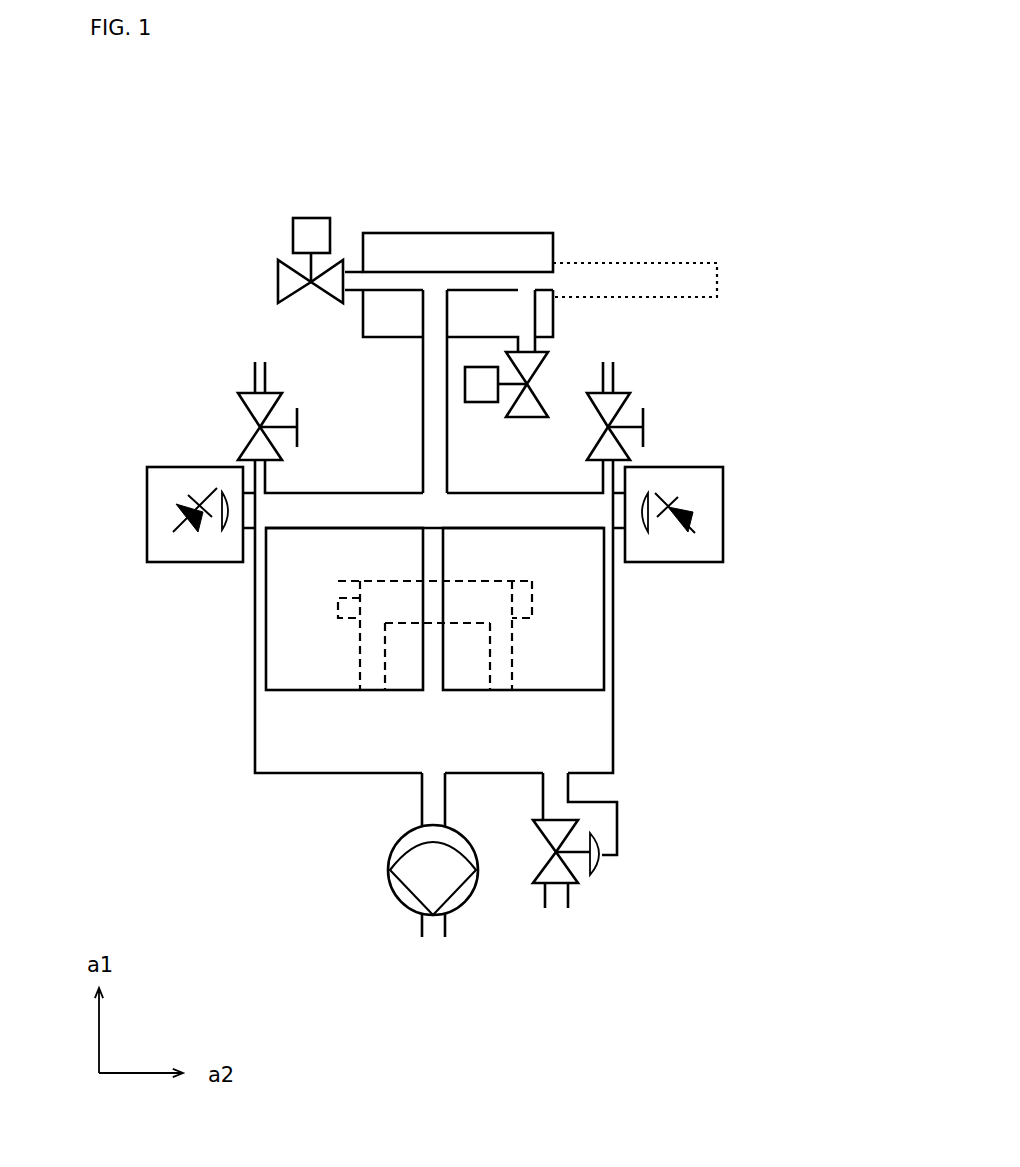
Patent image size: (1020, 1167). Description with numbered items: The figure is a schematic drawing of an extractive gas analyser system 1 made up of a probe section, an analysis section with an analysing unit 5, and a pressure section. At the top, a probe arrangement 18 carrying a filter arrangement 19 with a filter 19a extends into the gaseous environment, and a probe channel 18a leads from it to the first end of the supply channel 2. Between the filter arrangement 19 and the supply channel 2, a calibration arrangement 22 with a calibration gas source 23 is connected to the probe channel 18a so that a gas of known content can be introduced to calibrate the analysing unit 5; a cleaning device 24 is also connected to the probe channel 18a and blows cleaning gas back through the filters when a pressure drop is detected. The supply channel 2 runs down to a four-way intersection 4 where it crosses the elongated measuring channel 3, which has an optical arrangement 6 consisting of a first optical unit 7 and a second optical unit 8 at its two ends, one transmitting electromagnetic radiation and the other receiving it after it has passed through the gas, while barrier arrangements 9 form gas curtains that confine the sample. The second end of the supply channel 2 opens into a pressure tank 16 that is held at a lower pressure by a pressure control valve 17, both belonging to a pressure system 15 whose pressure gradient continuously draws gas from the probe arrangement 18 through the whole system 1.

The gas analyser system 1 is at (713, 131).
The supply channel 2 is at (433, 427).
The measuring channel 3 is at (523, 512).
The four-way intersection 4 is at (422, 508).
The analysing unit 5 is at (100, 521).
The optical arrangement 6 is at (426, 489).
The first optical unit 7 is at (162, 478).
The second optical unit 8 is at (690, 485).
The barrier arrangement 9 is at (200, 385).
The pressure system 15 is at (366, 864).
The pressure tank 16 is at (560, 728).
The pressure control valve 17 is at (609, 902).
The probe arrangement 18 is at (517, 245).
The probe channel 18a is at (480, 285).
The filter arrangement 19 is at (705, 245).
The filter 19a is at (672, 283).
The calibration arrangement 22 is at (567, 347).
The calibration gas source 23 is at (482, 385).
The cleaning device 24 is at (257, 219).